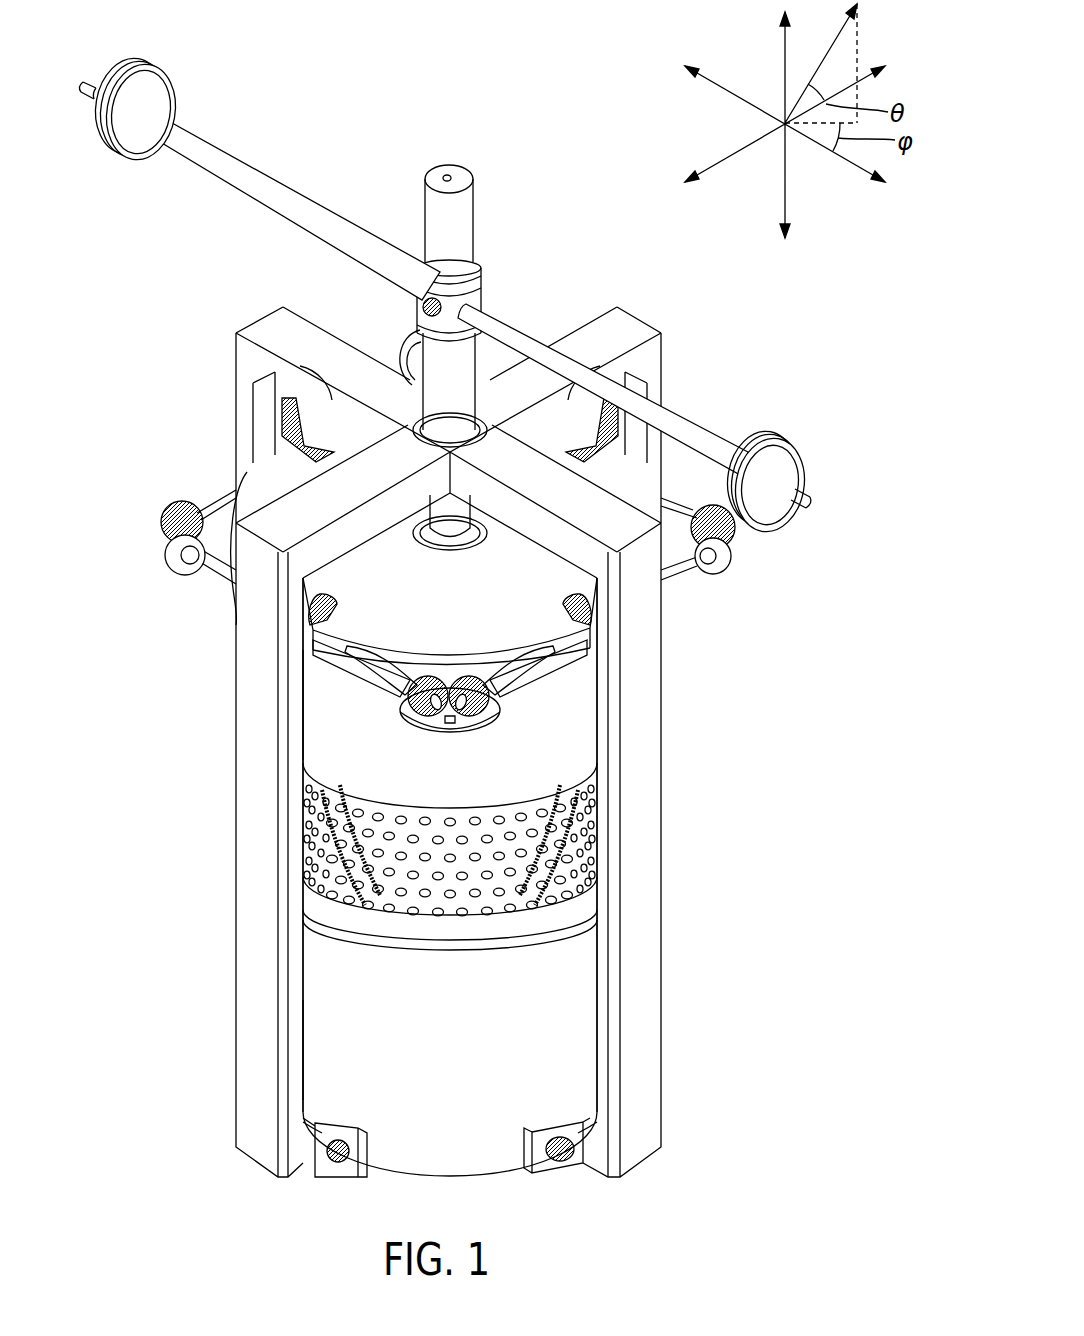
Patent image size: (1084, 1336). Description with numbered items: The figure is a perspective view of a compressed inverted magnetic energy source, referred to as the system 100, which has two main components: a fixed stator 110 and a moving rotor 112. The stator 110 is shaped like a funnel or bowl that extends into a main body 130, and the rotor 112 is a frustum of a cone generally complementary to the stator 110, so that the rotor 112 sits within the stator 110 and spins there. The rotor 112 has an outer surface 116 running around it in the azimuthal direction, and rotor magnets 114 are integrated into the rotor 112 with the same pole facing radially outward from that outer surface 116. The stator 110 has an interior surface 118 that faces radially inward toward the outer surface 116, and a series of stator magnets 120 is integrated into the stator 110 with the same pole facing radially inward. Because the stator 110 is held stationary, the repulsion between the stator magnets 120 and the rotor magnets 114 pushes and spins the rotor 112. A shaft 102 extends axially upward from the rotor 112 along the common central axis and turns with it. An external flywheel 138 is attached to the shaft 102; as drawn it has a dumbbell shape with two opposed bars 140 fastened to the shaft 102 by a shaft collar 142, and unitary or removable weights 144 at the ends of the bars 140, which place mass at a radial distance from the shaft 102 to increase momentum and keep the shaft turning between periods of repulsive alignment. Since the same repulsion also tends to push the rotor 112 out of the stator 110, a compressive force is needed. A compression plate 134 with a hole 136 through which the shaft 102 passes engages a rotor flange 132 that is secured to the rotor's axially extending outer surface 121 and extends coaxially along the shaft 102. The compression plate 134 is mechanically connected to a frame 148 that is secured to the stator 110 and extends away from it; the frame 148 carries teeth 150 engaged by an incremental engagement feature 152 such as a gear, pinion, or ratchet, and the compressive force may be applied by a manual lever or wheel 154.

The system 100 is at (744, 290).
The shaft 102 is at (465, 208).
The stator 110 is at (576, 998).
The rotor 112 is at (575, 748).
The rotor magnets 114 is at (442, 825).
The outer surface 116 is at (378, 792).
The interior surface 118 is at (318, 880).
The stator magnets 120 is at (558, 912).
The outer surface 121 is at (316, 697).
The main body 130 is at (325, 1005).
The rotor flange 132 is at (460, 737).
The compression plate 134 is at (260, 478).
The hole 136 is at (458, 550).
The external flywheel 138 is at (530, 302).
The opposed bars 140 is at (296, 207).
The shaft collar 142 is at (442, 309).
The weights 144 is at (158, 95).
The frame 148 is at (652, 663).
The teeth 150 is at (305, 446).
The incremental engagement feature 152 is at (312, 385).
The manual lever or wheel 154 is at (403, 333).